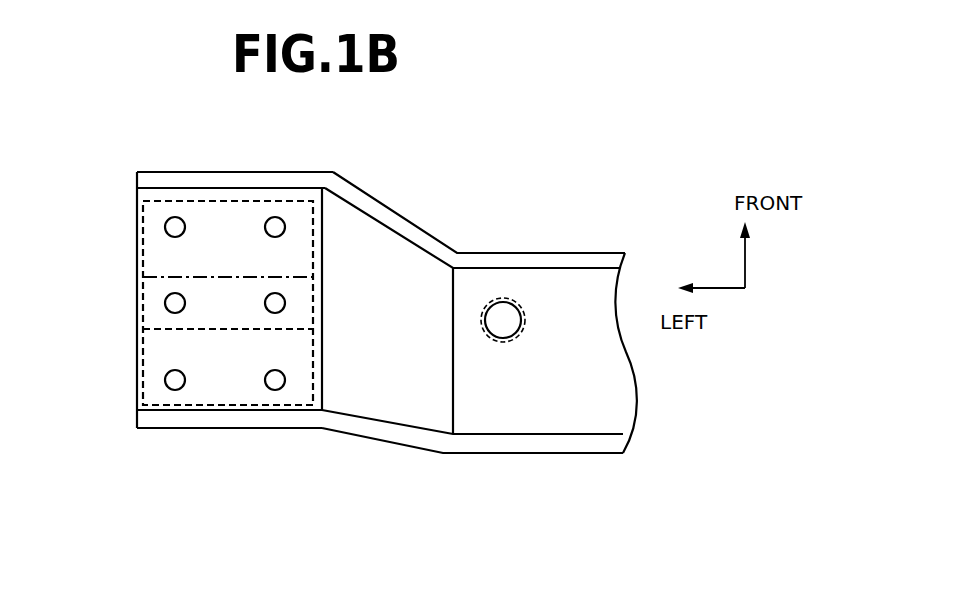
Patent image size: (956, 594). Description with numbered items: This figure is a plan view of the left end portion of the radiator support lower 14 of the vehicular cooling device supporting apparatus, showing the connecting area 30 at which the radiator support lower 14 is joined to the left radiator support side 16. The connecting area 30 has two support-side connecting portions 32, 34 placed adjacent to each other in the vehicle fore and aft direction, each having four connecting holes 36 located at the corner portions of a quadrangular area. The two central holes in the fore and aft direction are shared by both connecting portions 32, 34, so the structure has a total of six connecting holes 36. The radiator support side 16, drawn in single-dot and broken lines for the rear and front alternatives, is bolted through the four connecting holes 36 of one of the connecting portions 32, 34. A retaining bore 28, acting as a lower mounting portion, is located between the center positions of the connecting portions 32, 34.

The connecting area 30 is at (138, 124).
The radiator support lower 14 is at (510, 418).
The retaining bore 28 is at (508, 315).
The radiator support side 16 is at (180, 185).
The connecting hole 36 is at (280, 222).
The support-side connecting portion 34 is at (103, 215).
The support-side connecting portion 32 is at (118, 295).